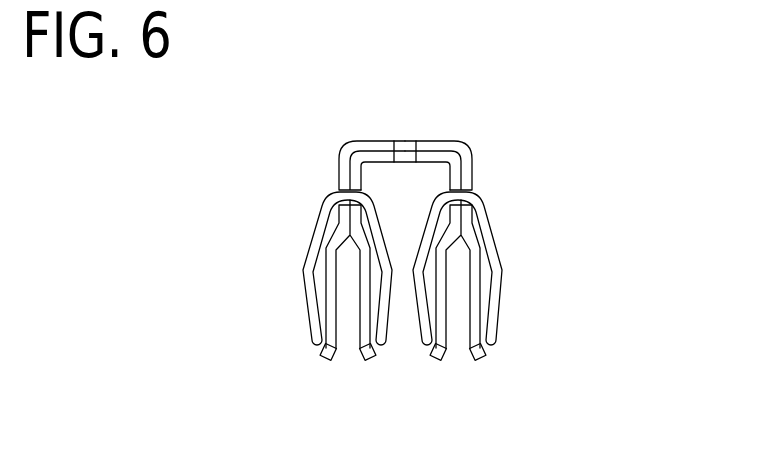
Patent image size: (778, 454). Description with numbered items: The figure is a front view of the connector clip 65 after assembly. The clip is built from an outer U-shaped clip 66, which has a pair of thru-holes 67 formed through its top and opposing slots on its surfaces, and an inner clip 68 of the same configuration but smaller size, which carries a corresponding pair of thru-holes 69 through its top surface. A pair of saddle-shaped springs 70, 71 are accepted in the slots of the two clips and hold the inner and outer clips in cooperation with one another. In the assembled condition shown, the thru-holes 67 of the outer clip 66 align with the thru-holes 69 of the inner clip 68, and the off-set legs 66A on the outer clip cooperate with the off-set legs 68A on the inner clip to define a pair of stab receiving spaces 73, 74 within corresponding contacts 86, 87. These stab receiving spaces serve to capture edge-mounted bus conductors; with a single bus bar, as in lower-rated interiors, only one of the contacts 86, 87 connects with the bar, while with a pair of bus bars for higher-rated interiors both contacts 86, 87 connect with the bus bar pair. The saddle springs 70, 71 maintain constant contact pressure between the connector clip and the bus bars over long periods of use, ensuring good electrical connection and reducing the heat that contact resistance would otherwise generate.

The connector clip 65 is at (210, 317).
The outer U-shaped clip 66 is at (466, 146).
The off-set legs 66A is at (484, 358).
The thru-holes 67 is at (405, 141).
The inner clip 68 is at (350, 150).
The off-set legs 68A is at (437, 359).
The thru-holes 69 is at (396, 163).
The saddle-shaped spring 70 is at (303, 268).
The saddle-shaped spring 71 is at (504, 266).
The stab receiving space 73 is at (358, 335).
The stab receiving space 74 is at (470, 335).
The contact 86 is at (349, 358).
The contact 87 is at (461, 355).